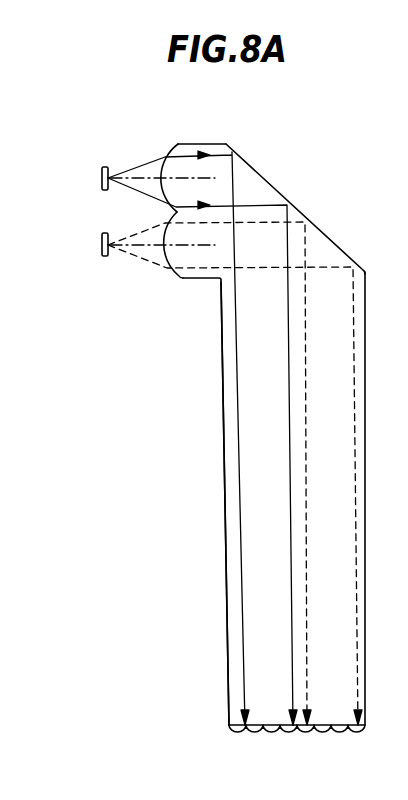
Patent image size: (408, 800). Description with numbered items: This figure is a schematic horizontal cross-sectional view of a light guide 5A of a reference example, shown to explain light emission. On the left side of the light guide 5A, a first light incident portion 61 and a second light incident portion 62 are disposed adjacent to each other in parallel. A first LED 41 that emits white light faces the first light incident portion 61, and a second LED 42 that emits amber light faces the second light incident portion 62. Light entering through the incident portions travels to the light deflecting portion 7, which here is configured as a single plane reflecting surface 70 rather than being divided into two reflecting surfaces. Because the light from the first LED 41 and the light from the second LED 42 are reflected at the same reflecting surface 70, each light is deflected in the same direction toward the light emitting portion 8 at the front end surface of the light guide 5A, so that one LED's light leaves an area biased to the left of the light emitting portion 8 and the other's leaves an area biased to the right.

The light deflecting portion 7 is at (280, 182).
The reflecting surface 70 is at (317, 228).
The first light incident portion 61 is at (162, 161).
The second light incident portion 62 is at (177, 280).
The first LED 41 is at (96, 178).
The second LED 42 is at (96, 245).
The light guide 5A is at (222, 389).
The light emitting portion 8 is at (333, 728).